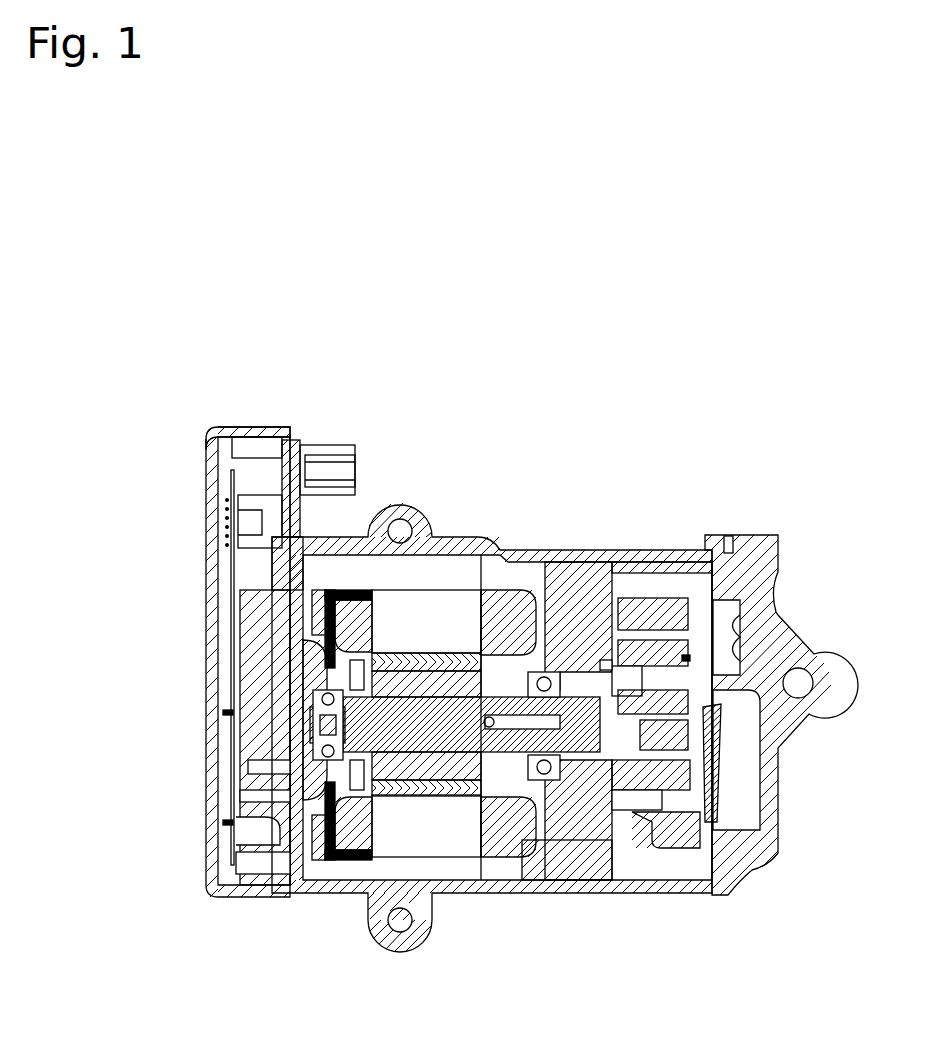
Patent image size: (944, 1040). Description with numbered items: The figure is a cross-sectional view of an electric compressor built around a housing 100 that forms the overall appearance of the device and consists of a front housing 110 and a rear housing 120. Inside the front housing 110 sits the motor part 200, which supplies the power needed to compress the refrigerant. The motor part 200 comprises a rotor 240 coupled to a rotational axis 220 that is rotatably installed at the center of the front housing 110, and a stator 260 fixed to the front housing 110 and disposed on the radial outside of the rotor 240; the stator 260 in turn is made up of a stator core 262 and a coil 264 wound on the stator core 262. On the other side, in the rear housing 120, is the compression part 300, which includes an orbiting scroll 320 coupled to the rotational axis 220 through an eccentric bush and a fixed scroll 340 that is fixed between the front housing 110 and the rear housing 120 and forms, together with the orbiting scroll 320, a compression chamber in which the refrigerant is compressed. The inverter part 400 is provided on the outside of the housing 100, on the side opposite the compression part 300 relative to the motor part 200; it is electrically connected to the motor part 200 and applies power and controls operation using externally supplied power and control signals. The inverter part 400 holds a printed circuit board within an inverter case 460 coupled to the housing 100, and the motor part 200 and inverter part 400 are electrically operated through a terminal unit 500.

The housing 100 is at (565, 553).
The front housing 110 is at (580, 548).
The rear housing 120 is at (748, 535).
The motor part 200 is at (587, 630).
The rotational axis 220 is at (385, 748).
The rotor 240 is at (418, 783).
The stator 260 is at (455, 678).
The stator core 262 is at (443, 608).
The coil 264 is at (356, 600).
The compression part 300 is at (723, 602).
The orbiting scroll 320 is at (650, 806).
The fixed scroll 340 is at (708, 770).
The inverter part 400 is at (236, 623).
The inverter case 460 is at (190, 452).
The terminal unit 500 is at (302, 590).